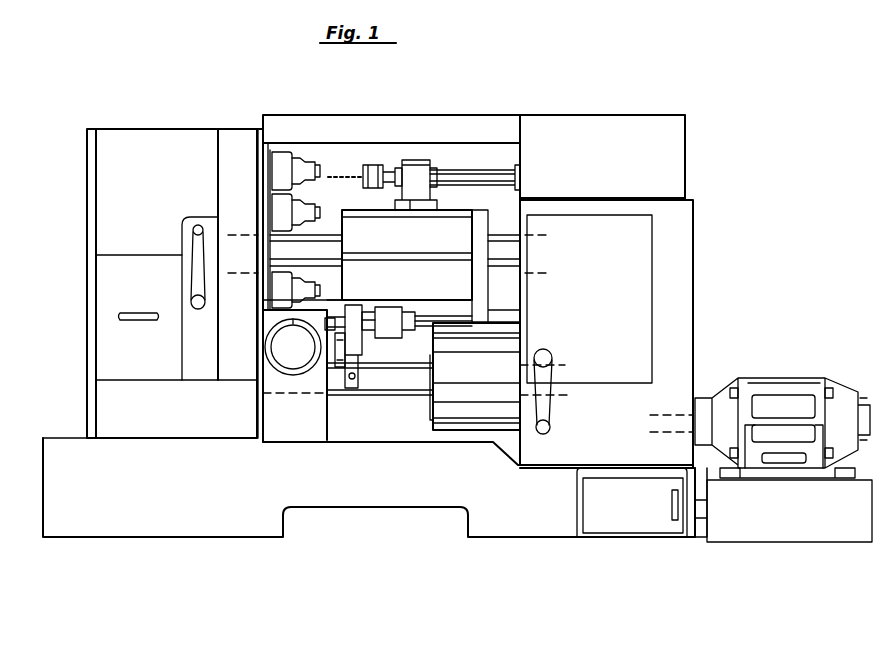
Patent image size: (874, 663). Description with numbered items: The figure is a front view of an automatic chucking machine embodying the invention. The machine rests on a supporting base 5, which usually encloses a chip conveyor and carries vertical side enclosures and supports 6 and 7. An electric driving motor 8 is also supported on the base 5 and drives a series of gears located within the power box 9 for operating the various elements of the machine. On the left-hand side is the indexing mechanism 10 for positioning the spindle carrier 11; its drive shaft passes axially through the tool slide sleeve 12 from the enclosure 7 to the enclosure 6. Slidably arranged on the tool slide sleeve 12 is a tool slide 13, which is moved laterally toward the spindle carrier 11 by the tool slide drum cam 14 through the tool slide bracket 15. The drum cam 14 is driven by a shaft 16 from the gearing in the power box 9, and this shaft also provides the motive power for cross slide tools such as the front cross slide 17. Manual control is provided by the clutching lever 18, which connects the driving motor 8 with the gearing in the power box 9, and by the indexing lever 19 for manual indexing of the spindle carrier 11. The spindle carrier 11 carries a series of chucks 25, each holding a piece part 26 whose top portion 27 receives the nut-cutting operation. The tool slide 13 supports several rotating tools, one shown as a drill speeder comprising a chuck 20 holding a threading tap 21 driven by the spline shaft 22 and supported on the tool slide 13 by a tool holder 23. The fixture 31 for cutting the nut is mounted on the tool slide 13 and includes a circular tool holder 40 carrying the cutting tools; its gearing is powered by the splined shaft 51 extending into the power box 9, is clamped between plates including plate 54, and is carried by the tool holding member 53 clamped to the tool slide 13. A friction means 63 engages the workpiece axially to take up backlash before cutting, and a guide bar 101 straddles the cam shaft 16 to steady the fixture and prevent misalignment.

The supporting base 5 is at (188, 518).
The vertical side enclosure and support 6 is at (113, 393).
The vertical side enclosure and support 7 is at (680, 321).
The electric driving motor 8 is at (785, 405).
The power box 9 is at (620, 283).
The indexing mechanism 10 is at (152, 172).
The spindle carrier 11 is at (270, 204).
The tool slide sleeve 12 is at (300, 250).
The tool slide 13 is at (437, 226).
The tool slide drum cam 14 is at (503, 351).
The tool slide bracket 15 is at (503, 313).
The shaft 16 is at (407, 383).
The cross slide tool 17 is at (262, 318).
The clutching lever 18 is at (547, 419).
The indexing lever 19 is at (192, 246).
The chuck 20 is at (376, 166).
The threading tap 21 is at (333, 178).
The spline shaft 22 is at (450, 178).
The tool holder 23 is at (425, 161).
The chuck 25 is at (283, 171).
The piece part 26 is at (300, 165).
The top portion 27 is at (316, 218).
The fixture 31 is at (340, 369).
The circular tool holder 40 is at (320, 353).
The splined shaft 51 is at (445, 318).
The tool holding member 53 is at (396, 304).
The plate 54 is at (360, 348).
The friction means 63 is at (327, 321).
The guide bar 101 is at (356, 386).